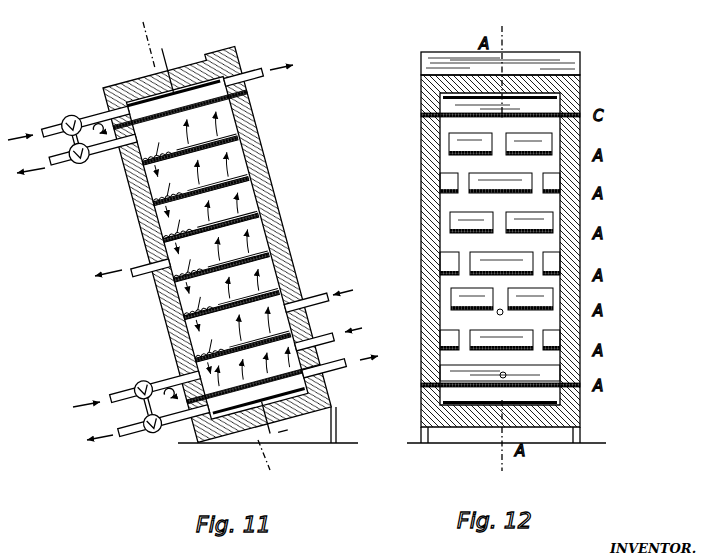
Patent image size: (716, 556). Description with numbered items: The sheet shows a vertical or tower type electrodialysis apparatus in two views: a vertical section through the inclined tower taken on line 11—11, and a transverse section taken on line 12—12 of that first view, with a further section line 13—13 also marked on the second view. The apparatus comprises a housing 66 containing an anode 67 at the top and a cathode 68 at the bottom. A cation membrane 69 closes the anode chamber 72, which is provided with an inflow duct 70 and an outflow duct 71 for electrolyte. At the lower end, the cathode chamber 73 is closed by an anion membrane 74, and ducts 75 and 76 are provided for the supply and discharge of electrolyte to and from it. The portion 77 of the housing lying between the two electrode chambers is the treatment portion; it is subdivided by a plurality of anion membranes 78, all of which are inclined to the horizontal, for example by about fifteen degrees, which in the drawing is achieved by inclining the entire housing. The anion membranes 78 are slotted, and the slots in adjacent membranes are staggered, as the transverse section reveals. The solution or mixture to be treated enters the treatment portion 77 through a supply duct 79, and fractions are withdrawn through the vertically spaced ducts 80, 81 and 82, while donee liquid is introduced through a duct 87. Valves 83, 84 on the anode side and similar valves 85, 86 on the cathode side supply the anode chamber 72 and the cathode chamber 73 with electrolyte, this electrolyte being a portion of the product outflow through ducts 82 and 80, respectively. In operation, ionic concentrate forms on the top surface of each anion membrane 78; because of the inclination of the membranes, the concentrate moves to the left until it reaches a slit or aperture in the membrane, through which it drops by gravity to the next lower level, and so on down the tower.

In FIG. 12, the section line 11— 11 is at (502, 26).
In FIG. 11, the section line 12— 12 is at (145, 21).
In FIG. 12, the section line 13- 13 is at (400, 233).
In FIG. 11, the housing 66 is at (265, 170).
In FIG. 12, the housing 66 is at (500, 251).
In FIG. 11, the anode 67 is at (207, 72).
In FIG. 11, the cathode 68 is at (300, 412).
In FIG. 11, the cation membrane 69 is at (252, 108).
In FIG. 12, the cation membrane 69 is at (421, 117).
In FIG. 11, the inflow duct 70 is at (100, 113).
In FIG. 11, the outflow duct 71 is at (258, 70).
In FIG. 11, the anode chamber 72 is at (150, 86).
In FIG. 11, the cathode chamber 73 is at (246, 405).
In FIG. 11, the anion membrane 74 is at (216, 393).
In FIG. 12, the anion membrane 74 is at (473, 388).
In FIG. 11, the duct 75 is at (182, 430).
In FIG. 11, the duct 76 is at (342, 380).
In FIG. 11, the treatment portion 77 is at (265, 275).
In FIG. 12, the treatment portion 77 is at (542, 322).
In FIG. 12, the anion membranes 78 is at (460, 185).
In FIG. 11, the supply duct 79 is at (325, 295).
In FIG. 11, the duct 80 is at (170, 375).
In FIG. 11, the duct 81 is at (142, 277).
In FIG. 11, the duct 82 is at (110, 160).
In FIG. 11, the valve 83 is at (66, 118).
In FIG. 11, the valve 84 is at (78, 166).
In FIG. 11, the valve 85 is at (146, 437).
In FIG. 11, the valve 86 is at (136, 382).
In FIG. 11, the duct 87 is at (328, 338).